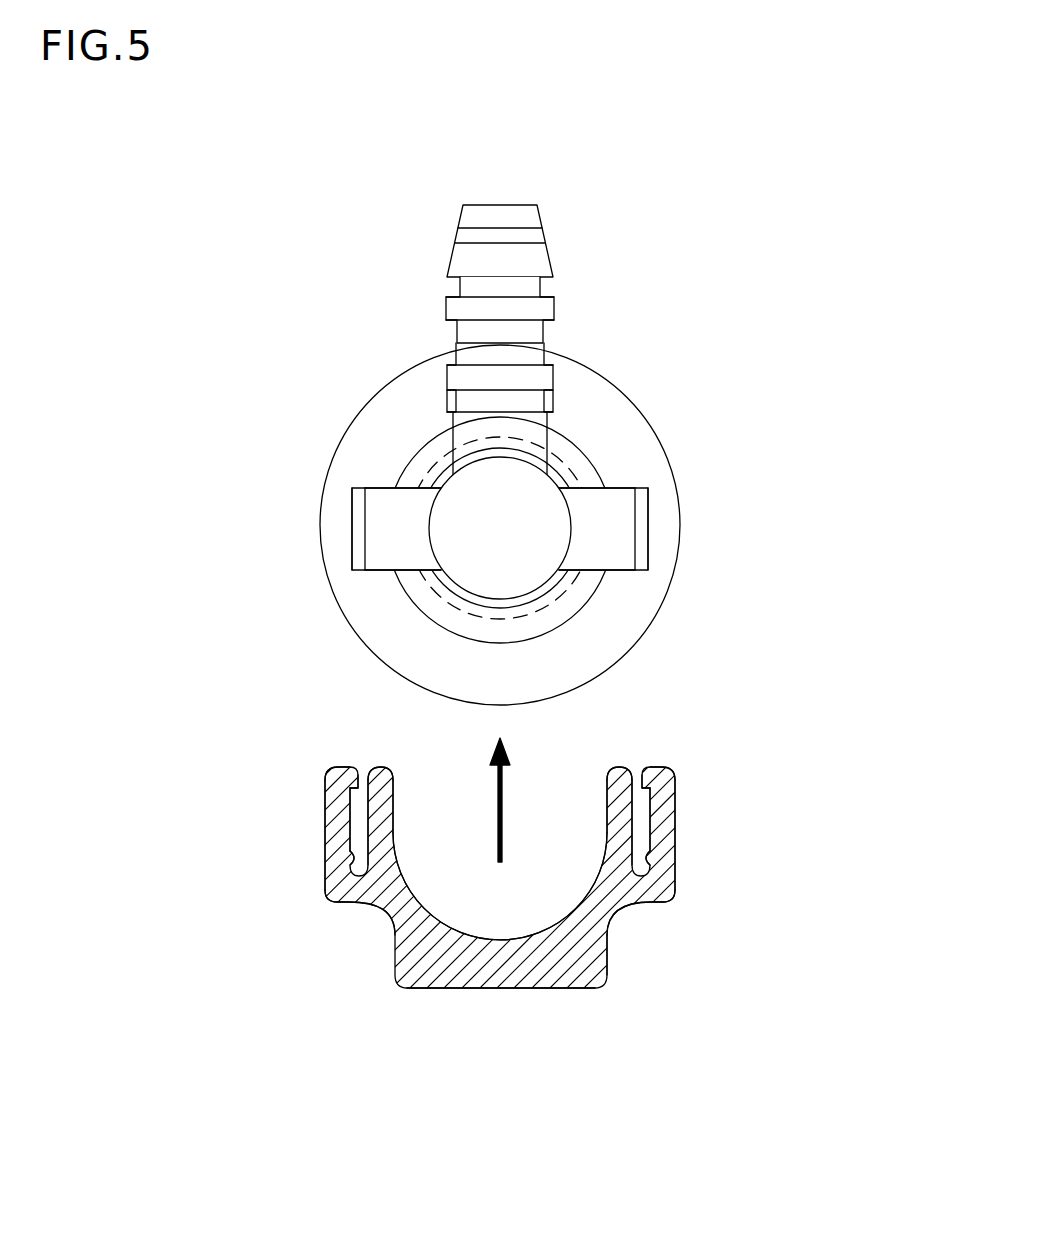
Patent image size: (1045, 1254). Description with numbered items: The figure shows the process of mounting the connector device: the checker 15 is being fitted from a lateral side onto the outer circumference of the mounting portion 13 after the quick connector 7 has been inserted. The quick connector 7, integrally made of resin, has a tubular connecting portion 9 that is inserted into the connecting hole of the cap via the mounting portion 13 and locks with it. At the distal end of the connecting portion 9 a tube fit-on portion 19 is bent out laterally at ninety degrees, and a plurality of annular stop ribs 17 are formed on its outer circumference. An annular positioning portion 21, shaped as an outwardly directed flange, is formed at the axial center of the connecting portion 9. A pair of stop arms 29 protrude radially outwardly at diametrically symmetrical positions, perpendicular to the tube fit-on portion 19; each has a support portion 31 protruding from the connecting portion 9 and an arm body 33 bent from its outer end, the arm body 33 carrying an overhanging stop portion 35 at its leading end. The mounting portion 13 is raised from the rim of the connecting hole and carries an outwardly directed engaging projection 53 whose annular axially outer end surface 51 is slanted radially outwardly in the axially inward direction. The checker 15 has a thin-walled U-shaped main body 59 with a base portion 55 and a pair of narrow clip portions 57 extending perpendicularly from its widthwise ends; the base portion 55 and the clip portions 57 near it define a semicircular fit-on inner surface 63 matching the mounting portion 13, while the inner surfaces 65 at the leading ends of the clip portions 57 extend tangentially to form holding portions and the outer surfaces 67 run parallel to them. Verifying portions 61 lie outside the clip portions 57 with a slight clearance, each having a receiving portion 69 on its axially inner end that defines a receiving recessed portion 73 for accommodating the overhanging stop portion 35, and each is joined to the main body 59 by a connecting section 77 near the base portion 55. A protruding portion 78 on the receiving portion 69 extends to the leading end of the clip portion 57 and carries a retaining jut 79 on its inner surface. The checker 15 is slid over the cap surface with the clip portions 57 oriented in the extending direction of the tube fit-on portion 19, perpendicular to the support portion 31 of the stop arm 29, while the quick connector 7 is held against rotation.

The quick connector 7 is at (567, 256).
The tube fit-on portion 19 is at (440, 251).
The annular stop ribs 17 is at (473, 400).
The annular positioning portion 21 is at (443, 478).
The mounting portion 13 is at (585, 438).
The outwardly directed engaging projection 53 is at (571, 437).
The annular axially outer end surface 51 is at (598, 468).
The tubular connecting portion 9 is at (447, 575).
The stop arms 29 is at (350, 528).
The support portion 31 is at (393, 523).
The arm body 33 is at (360, 547).
The overhanging stop portion 35 is at (357, 556).
The checker 15 is at (448, 1008).
The base portion 55 is at (515, 975).
The main body 59 is at (618, 960).
The fit-on inner surface 63 is at (530, 935).
The clip portions 57 is at (368, 772).
The retaining jut 79 is at (357, 786).
The protruding portion 78 is at (337, 780).
The inner surfaces 65 is at (390, 803).
The outer surfaces 67 is at (370, 817).
The verifying portions 61 is at (320, 833).
The receiving portion 69 is at (337, 850).
The receiving recessed portion 73 is at (357, 856).
The connecting section 77 is at (360, 883).